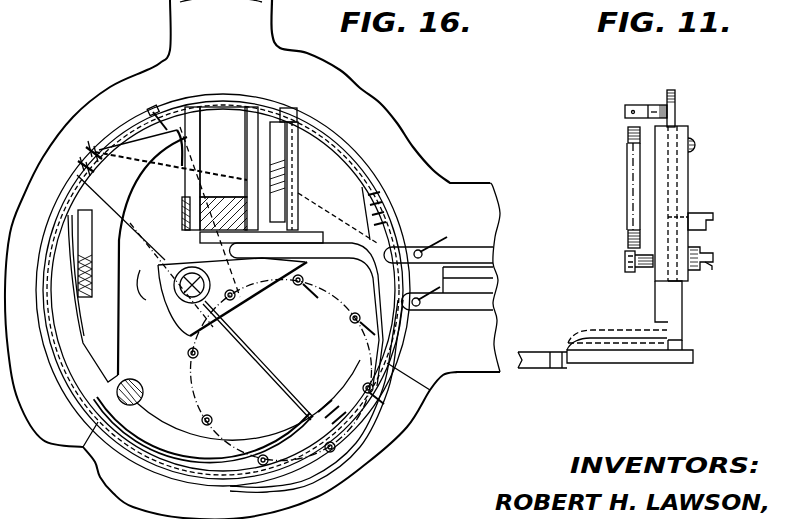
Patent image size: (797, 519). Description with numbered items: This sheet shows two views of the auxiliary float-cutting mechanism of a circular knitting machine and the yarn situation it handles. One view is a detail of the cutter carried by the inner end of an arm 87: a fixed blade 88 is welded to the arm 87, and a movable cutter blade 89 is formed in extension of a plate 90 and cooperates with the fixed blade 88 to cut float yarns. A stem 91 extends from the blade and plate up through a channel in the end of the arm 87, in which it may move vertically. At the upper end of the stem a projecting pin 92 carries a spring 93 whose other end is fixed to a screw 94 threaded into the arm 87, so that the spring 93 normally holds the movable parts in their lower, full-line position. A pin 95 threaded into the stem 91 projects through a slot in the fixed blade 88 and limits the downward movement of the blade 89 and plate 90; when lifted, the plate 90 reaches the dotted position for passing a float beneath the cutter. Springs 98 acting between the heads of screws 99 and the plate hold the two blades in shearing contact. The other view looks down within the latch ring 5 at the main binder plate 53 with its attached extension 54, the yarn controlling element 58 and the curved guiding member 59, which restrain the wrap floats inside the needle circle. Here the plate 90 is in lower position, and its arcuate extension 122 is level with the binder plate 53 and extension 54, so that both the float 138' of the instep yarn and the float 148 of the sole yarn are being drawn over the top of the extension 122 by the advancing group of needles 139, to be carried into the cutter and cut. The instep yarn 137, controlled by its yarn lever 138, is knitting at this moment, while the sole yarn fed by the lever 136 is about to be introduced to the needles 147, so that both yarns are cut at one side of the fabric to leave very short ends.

In FIG. 16, the latch ring 5 is at (252, 259).
In FIG. 16, the leg yarn 137 is at (255, 105).
In FIG. 16, the float of sole yarn 148 is at (222, 178).
In FIG. 16, the needles 139 is at (84, 150).
In FIG. 16, the extension 122 is at (140, 173).
In FIG. 16, the float of instep yarn 138' is at (158, 227).
In FIG. 16, the plate 90 is at (93, 296).
In FIG. 11, the plate 90 is at (672, 348).
In FIG. 16, the plate 53 is at (308, 282).
In FIG. 16, the yarn controlling element 58 is at (268, 283).
In FIG. 16, the curved guiding member 59 is at (332, 399).
In FIG. 16, the extension 54 is at (227, 409).
In FIG. 16, the needles 147 is at (348, 417).
In FIG. 16, the lever 136 is at (450, 252).
In FIG. 16, the yarn lever 138 is at (471, 290).
In FIG. 11, the projecting pin 92 is at (638, 105).
In FIG. 11, the stem 91 is at (676, 117).
In FIG. 11, the spring 93 is at (628, 135).
In FIG. 11, the arm 87 is at (658, 188).
In FIG. 11, the screw 94 is at (640, 272).
In FIG. 11, the fixed blade 88 is at (678, 321).
In FIG. 11, the pin 95 is at (708, 205).
In FIG. 11, the screws 99 is at (705, 254).
In FIG. 11, the springs 98 is at (703, 268).
In FIG. 11, the movable cutter blade 89 is at (674, 348).